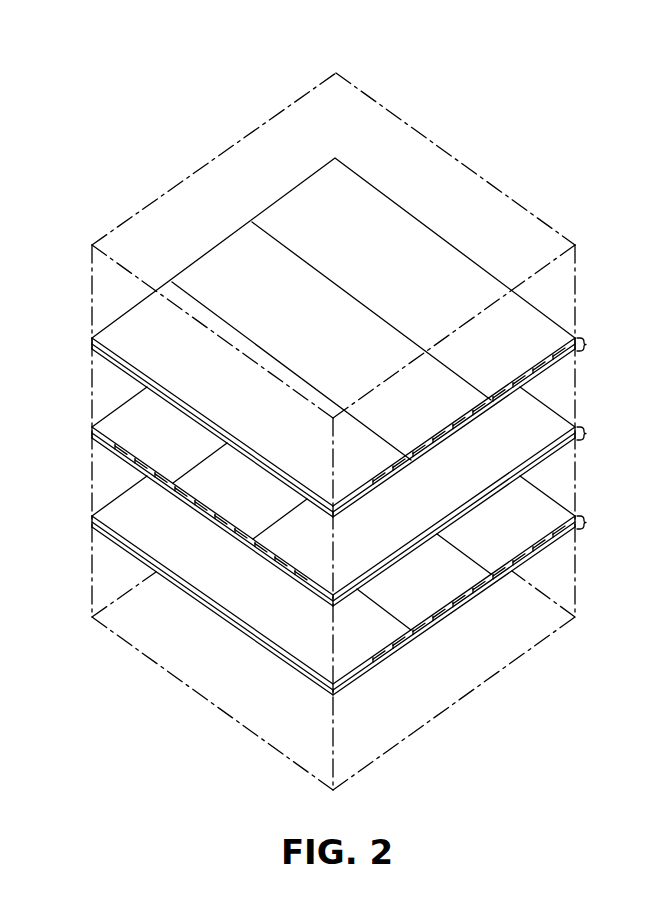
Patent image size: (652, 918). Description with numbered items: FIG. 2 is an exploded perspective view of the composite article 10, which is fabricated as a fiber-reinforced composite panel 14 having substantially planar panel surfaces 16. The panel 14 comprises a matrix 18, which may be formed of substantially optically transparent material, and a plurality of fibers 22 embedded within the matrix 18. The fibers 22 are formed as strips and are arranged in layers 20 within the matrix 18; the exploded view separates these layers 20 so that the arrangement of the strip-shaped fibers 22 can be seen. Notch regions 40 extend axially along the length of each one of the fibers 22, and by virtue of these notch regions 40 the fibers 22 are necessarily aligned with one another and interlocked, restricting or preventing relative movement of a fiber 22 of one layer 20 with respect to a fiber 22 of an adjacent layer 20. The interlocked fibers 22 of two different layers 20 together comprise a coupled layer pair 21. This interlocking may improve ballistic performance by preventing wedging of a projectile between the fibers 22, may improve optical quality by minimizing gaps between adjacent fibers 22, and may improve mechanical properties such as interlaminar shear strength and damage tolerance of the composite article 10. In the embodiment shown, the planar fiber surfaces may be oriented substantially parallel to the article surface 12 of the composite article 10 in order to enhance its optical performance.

The composite article 10 is at (324, 431).
The article surface 12 is at (210, 186).
The fiber-reinforced composite panel 14 is at (326, 418).
The panel surfaces 16 is at (407, 156).
The matrix 18 is at (133, 632).
The layers 20 is at (326, 486).
The coupled layer pair 21 is at (588, 344).
The fibers 22 is at (530, 324).
The notch regions 40 is at (530, 376).